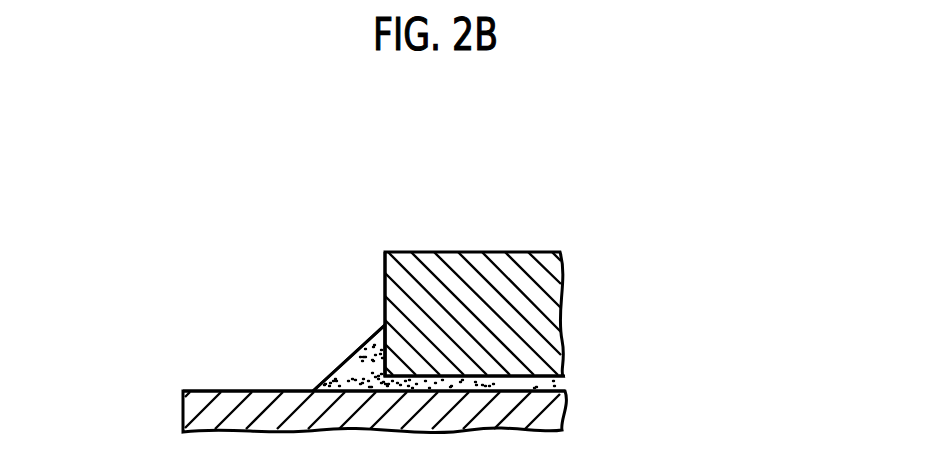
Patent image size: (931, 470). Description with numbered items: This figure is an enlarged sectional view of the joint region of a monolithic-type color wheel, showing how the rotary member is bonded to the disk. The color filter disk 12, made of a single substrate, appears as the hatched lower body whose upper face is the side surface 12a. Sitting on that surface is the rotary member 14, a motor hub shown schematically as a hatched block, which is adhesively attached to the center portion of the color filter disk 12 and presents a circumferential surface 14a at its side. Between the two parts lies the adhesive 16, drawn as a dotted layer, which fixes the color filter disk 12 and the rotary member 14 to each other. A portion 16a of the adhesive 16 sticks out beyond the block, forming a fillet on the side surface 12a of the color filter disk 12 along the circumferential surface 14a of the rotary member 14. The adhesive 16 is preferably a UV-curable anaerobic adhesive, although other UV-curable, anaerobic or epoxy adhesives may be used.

The color filter disk 12 is at (203, 391).
The side surface 12a is at (246, 389).
The rotary member 14 is at (500, 252).
The circumferential surface 14a is at (382, 281).
The adhesive 16 is at (567, 383).
The portion 16a is at (337, 362).